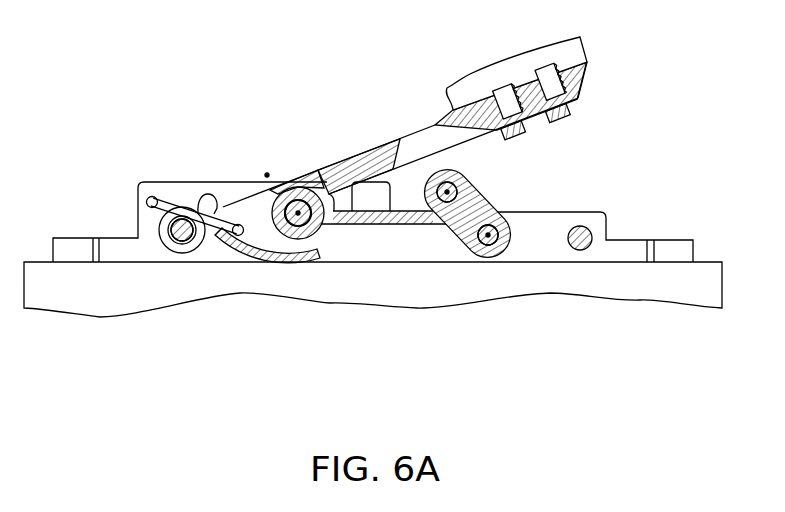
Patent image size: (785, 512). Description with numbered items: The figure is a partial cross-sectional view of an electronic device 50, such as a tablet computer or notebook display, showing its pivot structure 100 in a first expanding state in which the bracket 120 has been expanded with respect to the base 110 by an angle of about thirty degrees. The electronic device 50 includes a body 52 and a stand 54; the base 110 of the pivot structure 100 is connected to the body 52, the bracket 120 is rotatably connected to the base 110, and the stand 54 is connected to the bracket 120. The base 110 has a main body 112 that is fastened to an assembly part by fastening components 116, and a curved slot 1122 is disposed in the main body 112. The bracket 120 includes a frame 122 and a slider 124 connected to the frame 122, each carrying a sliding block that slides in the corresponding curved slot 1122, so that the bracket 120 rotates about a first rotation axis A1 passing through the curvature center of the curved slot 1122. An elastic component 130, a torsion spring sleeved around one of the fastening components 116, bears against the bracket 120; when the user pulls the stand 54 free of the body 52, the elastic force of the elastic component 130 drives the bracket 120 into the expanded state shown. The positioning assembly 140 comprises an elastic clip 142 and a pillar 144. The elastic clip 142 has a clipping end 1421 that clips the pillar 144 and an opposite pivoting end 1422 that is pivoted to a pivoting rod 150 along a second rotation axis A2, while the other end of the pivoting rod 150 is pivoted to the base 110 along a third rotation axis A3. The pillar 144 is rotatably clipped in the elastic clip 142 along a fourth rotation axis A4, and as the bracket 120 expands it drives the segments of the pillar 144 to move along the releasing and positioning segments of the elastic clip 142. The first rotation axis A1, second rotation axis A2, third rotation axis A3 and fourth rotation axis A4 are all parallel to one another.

The electronic device 50 is at (392, 333).
The body 52 is at (708, 287).
The stand 54 is at (573, 53).
The pivot structure 100 is at (408, 193).
The base 110 is at (408, 166).
The main body 112 is at (628, 248).
The curved slot 1122 is at (205, 195).
The fastening component 116 is at (205, 248).
The bracket 120 is at (554, 81).
The frame 122 is at (475, 122).
The slider 124 is at (270, 254).
The elastic component 130 is at (160, 247).
The positioning assembly 140 is at (406, 196).
The elastic clip 142 is at (410, 120).
The clipping end 1421 is at (238, 192).
The pivoting end 1422 is at (436, 224).
The pillar 144 is at (356, 237).
The pivoting rod 150 is at (486, 264).
The first rotation axis A1 is at (266, 174).
The second rotation axis A2 is at (449, 191).
The third rotation axis A3 is at (489, 236).
The fourth rotation axis A4 is at (299, 214).